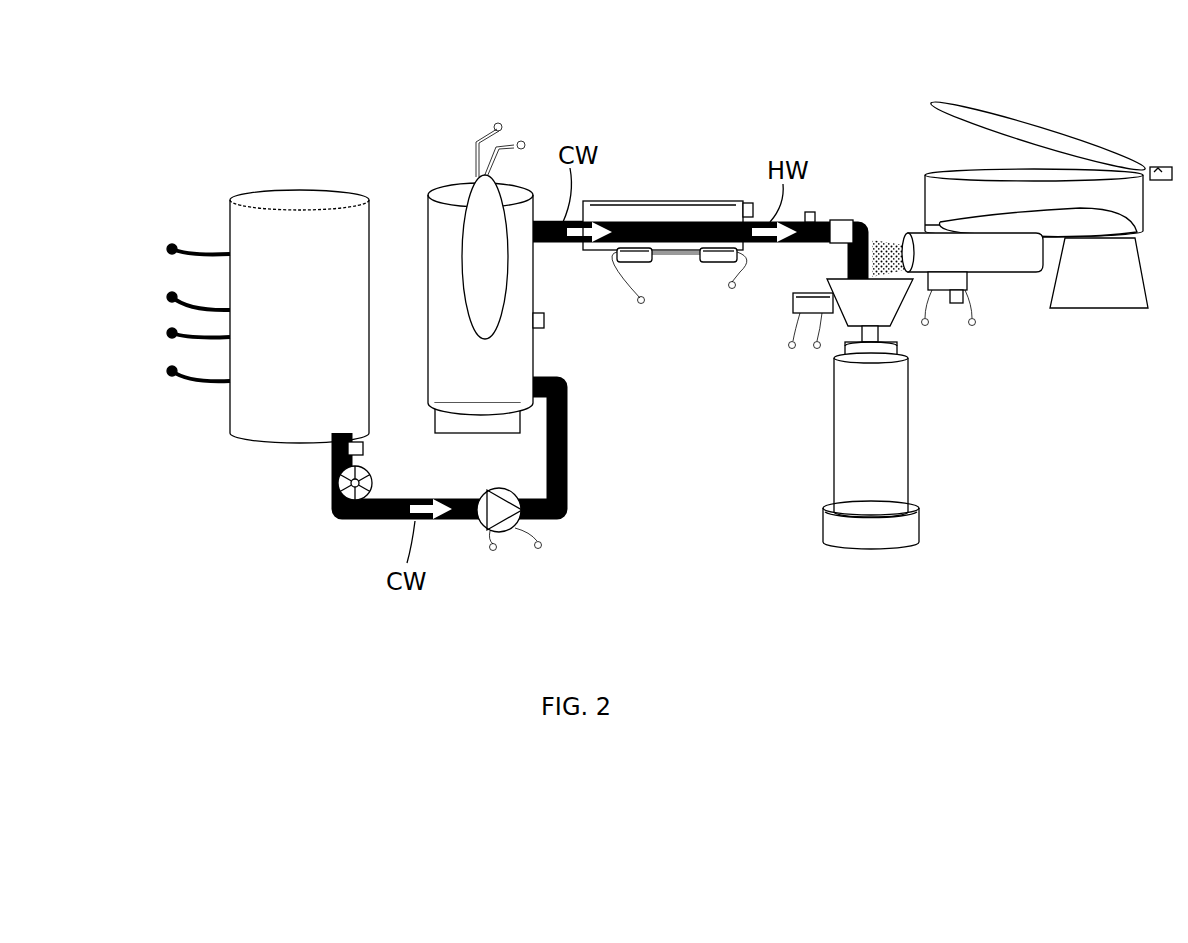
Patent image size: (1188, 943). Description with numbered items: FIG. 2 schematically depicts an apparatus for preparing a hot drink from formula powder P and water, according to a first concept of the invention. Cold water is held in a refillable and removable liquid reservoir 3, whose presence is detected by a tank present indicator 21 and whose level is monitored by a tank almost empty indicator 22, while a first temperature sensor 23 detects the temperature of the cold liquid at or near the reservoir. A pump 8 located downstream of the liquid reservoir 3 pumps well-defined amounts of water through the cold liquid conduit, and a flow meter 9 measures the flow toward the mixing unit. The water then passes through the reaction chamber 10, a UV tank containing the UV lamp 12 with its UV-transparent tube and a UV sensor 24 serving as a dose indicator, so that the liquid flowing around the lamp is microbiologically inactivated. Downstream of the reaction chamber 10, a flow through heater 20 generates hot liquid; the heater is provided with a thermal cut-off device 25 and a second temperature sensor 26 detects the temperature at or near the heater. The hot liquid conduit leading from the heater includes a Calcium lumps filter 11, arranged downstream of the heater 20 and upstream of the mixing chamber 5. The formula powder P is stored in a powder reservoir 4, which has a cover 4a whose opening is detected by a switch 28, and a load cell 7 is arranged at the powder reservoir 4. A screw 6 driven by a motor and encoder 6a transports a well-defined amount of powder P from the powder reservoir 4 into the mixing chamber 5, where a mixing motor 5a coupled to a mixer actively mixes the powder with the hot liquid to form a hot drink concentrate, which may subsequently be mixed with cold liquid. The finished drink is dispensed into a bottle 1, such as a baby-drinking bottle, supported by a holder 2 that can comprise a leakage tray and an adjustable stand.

The bottle 1 is at (878, 422).
The holder 2 is at (830, 526).
The liquid reservoir 3 is at (302, 312).
The powder reservoir 4 is at (1057, 183).
The cover 4a is at (966, 105).
The mixing chamber 5 is at (878, 316).
The mixing motor 5a is at (795, 304).
The screw 6 is at (1013, 258).
The motor and encoder 6a is at (945, 287).
The load cell 7 is at (1097, 285).
The pump 8 is at (504, 532).
The flow meter 9 is at (343, 492).
The reaction chamber 10 is at (453, 190).
The Calcium lumps filter 11 is at (840, 222).
The UV lamp 12 is at (480, 272).
The flow through heater 20 is at (655, 200).
The tank present indicator 21 is at (178, 400).
The tank almost empty indicator 22 is at (178, 235).
The first temperature sensor 23 is at (363, 447).
The UV sensor 24 is at (545, 320).
The thermal cut-off device 25 is at (712, 262).
The second temperature sensor 26 is at (748, 203).
The switch 28 is at (1160, 168).
The formula powder P is at (887, 240).